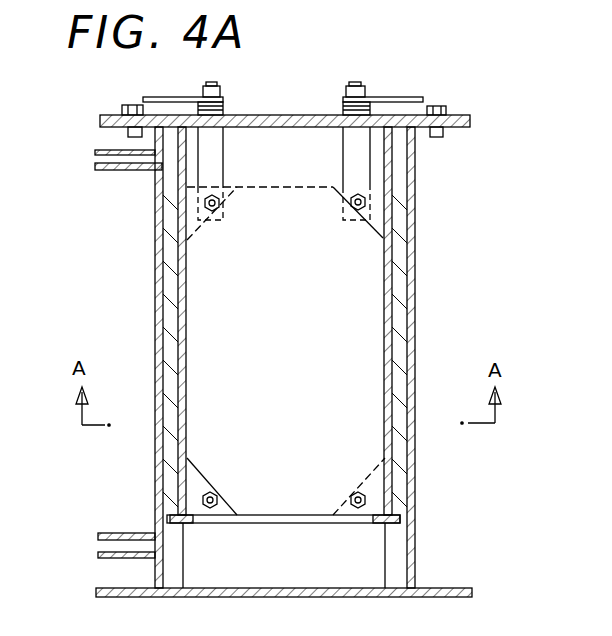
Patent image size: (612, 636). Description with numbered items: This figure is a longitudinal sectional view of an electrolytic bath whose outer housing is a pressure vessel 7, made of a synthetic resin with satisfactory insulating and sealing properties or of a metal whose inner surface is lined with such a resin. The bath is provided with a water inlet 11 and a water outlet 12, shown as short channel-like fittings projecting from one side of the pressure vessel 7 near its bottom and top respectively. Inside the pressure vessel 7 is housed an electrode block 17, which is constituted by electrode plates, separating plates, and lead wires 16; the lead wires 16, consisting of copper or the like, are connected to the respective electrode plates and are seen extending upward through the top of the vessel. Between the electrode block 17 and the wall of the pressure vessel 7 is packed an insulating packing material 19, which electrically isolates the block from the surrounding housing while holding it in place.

The pressure vessel 7 is at (440, 351).
The insulating packing material 19 is at (400, 296).
The electrode block 17 is at (193, 342).
The lead wires 16 is at (360, 165).
The water outlet 12 is at (95, 160).
The water inlet 11 is at (97, 548).